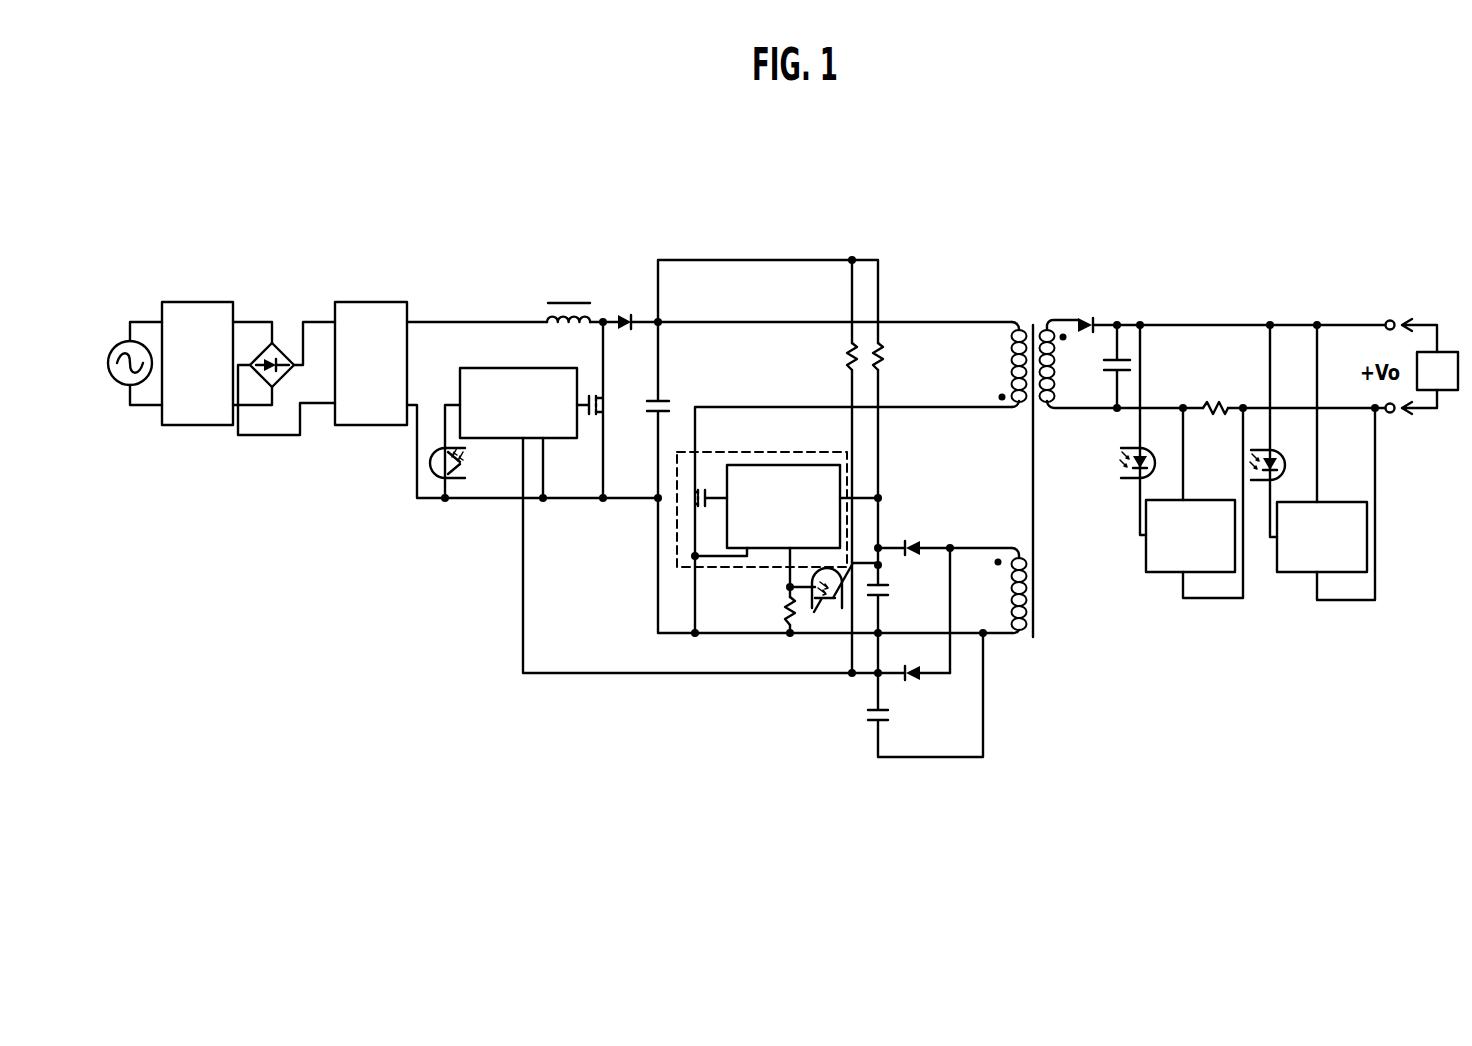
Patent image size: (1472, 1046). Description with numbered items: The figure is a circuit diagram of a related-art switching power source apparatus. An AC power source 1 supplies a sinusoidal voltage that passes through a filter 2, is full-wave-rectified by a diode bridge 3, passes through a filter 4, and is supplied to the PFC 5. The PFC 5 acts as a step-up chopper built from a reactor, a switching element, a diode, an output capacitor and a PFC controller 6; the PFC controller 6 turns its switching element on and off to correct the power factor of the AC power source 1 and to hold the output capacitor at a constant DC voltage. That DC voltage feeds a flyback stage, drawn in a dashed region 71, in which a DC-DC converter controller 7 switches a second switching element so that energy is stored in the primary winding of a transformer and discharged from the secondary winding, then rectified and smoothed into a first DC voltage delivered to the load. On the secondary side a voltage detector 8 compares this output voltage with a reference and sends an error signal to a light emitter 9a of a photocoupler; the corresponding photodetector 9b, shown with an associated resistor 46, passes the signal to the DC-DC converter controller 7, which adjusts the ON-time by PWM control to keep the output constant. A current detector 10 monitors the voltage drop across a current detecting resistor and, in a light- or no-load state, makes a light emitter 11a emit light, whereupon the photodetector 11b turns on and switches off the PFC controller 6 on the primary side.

The AC power source 1 is at (124, 388).
The filter 2 is at (205, 301).
The diode bridge 3 is at (278, 345).
The filter 4 is at (374, 301).
The PFC 5 is at (612, 352).
The PFC controller 6 is at (558, 438).
The DC-DC converter controller 7 is at (791, 465).
The switching circuit 71 is at (834, 519).
The resistor 46 is at (782, 607).
The voltage detector 8 is at (1290, 572).
The light emitter 9a is at (1258, 485).
The photodetector 9b is at (826, 612).
The current detector 10 is at (1158, 572).
The light emitter 11a is at (1125, 482).
The photodetector 11b is at (430, 470).